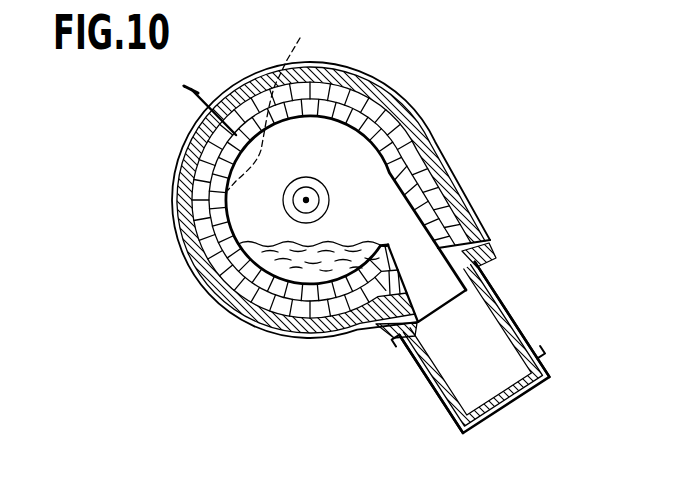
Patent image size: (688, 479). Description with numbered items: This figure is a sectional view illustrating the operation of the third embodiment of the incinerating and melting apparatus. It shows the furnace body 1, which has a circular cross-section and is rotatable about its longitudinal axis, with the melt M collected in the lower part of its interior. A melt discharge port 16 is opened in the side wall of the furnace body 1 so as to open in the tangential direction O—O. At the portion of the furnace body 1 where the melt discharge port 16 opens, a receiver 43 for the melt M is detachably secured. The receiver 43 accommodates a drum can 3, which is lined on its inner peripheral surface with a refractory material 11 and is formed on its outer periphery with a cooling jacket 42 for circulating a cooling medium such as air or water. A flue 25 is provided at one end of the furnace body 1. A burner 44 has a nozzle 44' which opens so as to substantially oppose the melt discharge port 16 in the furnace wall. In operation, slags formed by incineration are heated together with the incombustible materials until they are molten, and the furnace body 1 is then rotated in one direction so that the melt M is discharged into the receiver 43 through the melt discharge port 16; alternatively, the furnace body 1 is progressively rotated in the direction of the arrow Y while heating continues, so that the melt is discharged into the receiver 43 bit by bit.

The furnace body 1 is at (442, 140).
The drum can 3 is at (424, 381).
The refractory material 11 is at (519, 334).
The melt discharge port 16 is at (424, 274).
The flue 25 is at (318, 181).
The cooling jacket 42 is at (444, 417).
The receiver 43 is at (508, 297).
The burner 44 is at (221, 75).
The nozzle 44' is at (274, 102).
The melt M is at (270, 243).
The tangential direction O is at (309, 200).
The direction of rotation Y is at (373, 342).